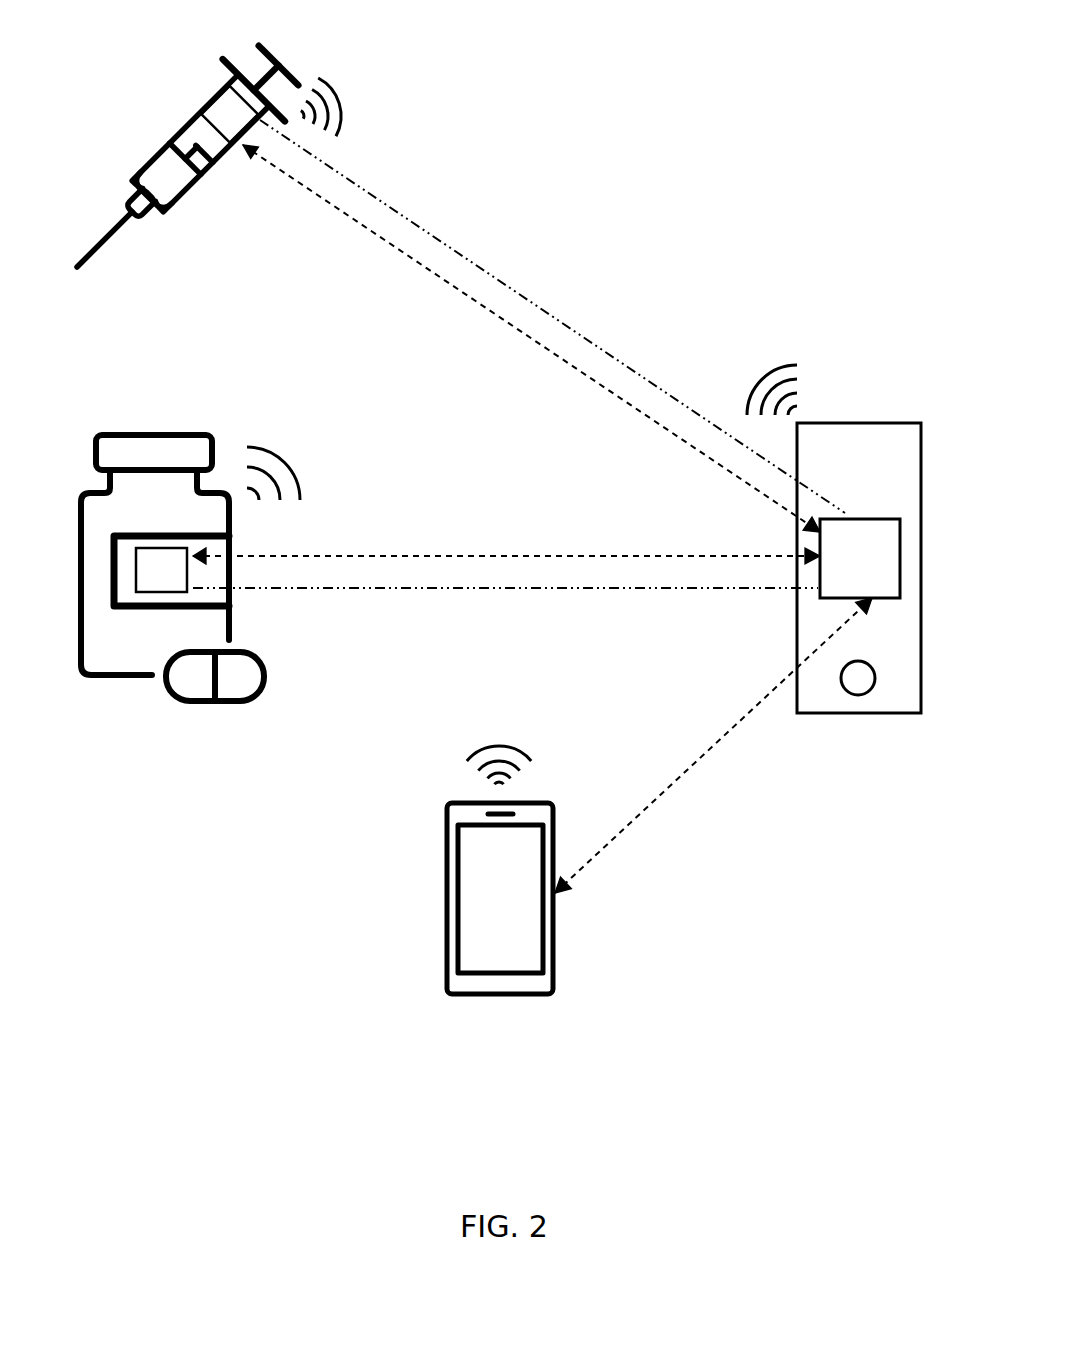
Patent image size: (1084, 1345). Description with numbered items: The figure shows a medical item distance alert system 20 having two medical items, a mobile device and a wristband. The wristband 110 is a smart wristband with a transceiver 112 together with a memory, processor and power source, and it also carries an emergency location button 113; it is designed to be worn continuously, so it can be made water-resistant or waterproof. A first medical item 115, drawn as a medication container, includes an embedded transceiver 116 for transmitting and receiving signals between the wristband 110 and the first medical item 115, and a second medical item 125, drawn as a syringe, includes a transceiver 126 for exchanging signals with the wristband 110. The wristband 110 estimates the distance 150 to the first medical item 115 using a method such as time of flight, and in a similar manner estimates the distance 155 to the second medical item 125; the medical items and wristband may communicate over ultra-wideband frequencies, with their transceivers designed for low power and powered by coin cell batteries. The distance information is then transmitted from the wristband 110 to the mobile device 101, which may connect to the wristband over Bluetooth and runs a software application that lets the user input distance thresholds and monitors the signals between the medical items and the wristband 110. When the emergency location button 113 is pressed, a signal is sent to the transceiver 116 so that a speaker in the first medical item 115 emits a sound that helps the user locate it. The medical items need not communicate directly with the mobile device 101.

The medical item distance alert system 20 is at (722, 981).
The mobile device 101 is at (440, 910).
The wristband 110 is at (897, 713).
The transceiver 112 is at (865, 543).
The emergency location button 113 is at (858, 680).
The first medical item 115 is at (135, 678).
The transceiver 116 is at (162, 572).
The second medical item 125 is at (173, 132).
The transceiver 126 is at (232, 110).
The distance 150 is at (485, 588).
The distance 155 is at (502, 277).